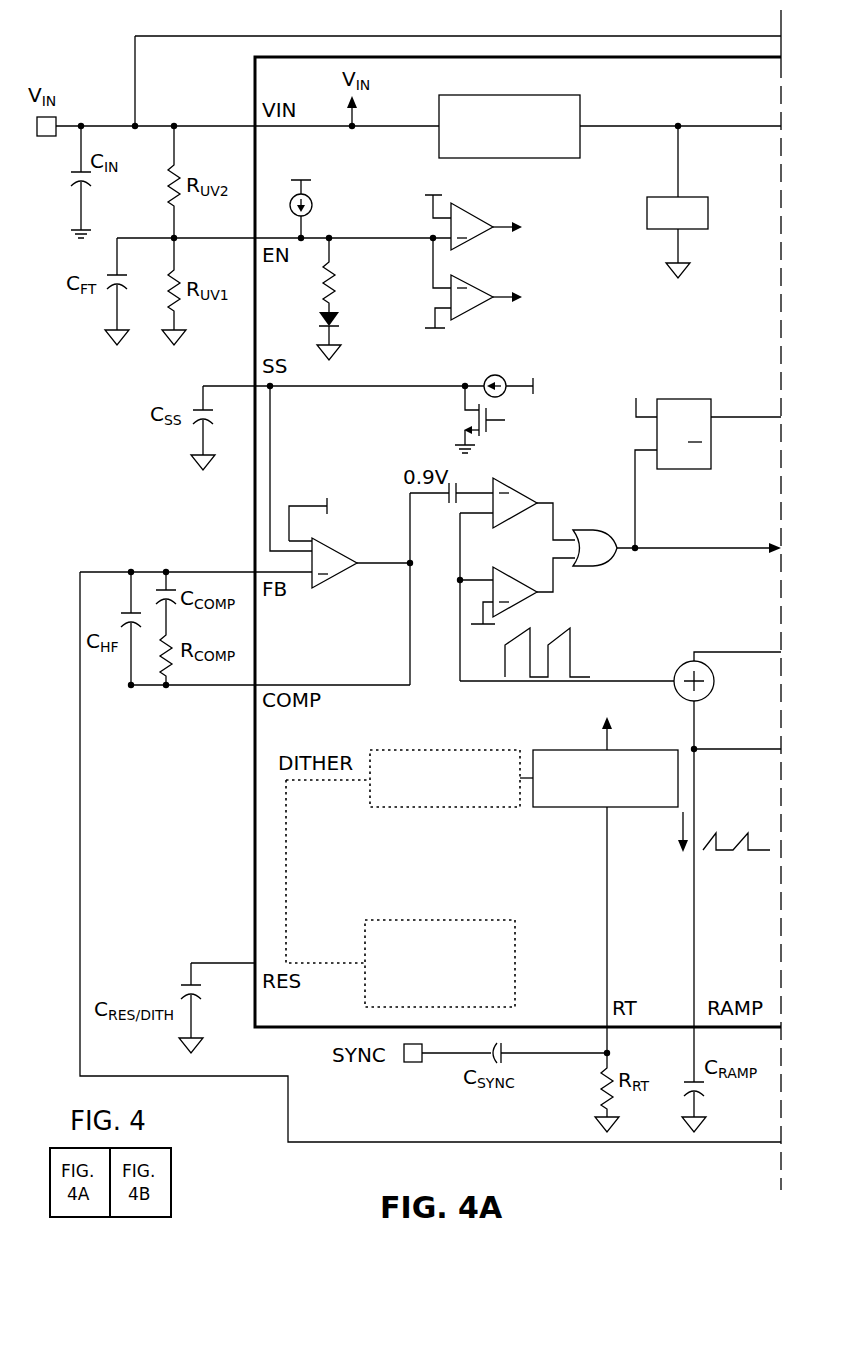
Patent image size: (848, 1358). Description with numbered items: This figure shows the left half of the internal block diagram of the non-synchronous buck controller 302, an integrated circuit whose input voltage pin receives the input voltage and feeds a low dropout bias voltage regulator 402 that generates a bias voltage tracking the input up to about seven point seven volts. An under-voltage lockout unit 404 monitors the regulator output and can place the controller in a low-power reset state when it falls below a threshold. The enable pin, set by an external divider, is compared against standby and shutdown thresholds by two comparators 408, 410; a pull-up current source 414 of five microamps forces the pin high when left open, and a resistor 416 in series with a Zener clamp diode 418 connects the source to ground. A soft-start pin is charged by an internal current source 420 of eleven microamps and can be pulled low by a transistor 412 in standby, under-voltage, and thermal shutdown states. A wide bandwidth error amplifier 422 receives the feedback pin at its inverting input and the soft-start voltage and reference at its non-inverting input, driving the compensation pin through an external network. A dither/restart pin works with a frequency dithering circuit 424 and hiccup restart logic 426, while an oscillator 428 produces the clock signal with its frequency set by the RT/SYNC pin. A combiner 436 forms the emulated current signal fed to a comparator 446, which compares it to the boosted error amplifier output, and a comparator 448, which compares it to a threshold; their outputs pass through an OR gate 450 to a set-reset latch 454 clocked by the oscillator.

The non-synchronous buck controller 302 is at (560, 57).
The low dropout bias voltage regulator 402 is at (582, 110).
The under-voltage lockout unit 404 is at (697, 197).
The comparator 408 is at (486, 215).
The comparator 410 is at (486, 285).
The transistor 412 is at (480, 418).
The pull-up current source 414 is at (312, 200).
The resistor 416 is at (320, 288).
The Zener clamp diode 418 is at (341, 320).
The internal current source 420 is at (500, 376).
The error amplifier 422 is at (312, 590).
The frequency dithering circuit 424 is at (417, 807).
The hiccup restart logic 426 is at (475, 920).
The oscillator 428 is at (568, 807).
The combiner 436 is at (680, 664).
The comparator 446 is at (506, 478).
The comparator 448 is at (506, 570).
The OR gate 450 is at (598, 530).
The set-reset latch 454 is at (680, 399).